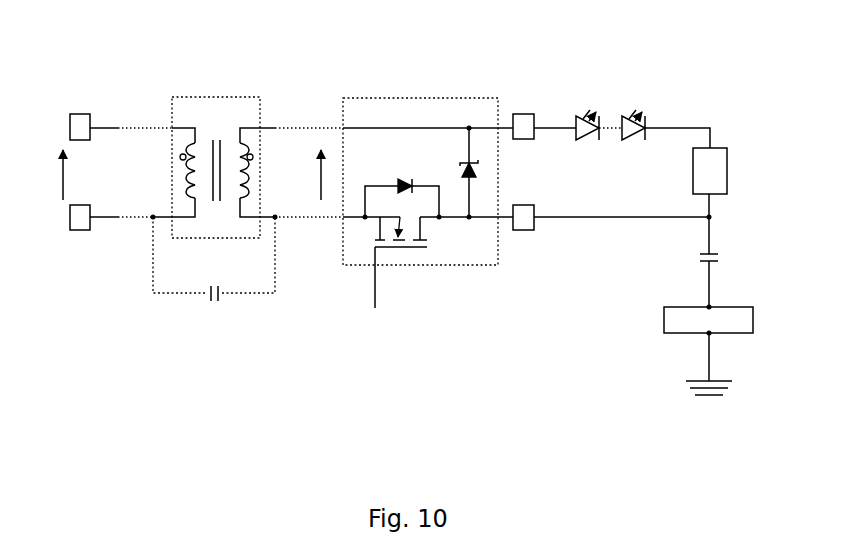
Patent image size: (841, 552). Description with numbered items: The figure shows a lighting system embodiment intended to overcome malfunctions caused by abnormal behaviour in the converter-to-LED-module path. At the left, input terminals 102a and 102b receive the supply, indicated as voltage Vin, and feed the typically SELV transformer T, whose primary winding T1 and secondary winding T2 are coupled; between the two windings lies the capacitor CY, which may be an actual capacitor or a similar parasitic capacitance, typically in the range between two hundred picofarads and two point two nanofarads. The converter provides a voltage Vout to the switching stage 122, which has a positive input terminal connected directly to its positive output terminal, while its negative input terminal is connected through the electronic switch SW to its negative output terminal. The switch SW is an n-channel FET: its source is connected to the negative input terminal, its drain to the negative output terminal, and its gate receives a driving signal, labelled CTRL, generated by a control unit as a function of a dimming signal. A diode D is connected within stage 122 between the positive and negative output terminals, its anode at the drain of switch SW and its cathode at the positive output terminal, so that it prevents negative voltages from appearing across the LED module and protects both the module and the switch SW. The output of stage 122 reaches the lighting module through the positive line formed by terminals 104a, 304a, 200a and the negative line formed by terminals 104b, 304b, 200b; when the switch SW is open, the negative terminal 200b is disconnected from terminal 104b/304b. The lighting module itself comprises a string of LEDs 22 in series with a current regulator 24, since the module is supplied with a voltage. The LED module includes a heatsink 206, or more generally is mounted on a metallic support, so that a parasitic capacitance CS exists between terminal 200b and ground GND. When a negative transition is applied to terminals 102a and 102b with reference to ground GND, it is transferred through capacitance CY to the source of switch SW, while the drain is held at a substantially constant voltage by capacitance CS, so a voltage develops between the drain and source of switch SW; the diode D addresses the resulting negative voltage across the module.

The input terminal 102a is at (75, 112).
The input terminal 102b is at (75, 233).
The transformer T is at (217, 162).
The primary winding T1 is at (200, 207).
The secondary winding T2 is at (232, 207).
The capacitor CY is at (220, 306).
The switching stage 122 is at (396, 96).
The diode D is at (461, 170).
The electronic switch SW is at (425, 259).
The control signal CTRL is at (347, 281).
The input voltage Vin is at (46, 175).
The voltage Vout is at (305, 175).
The terminal 104a is at (553, 84).
The terminal 304a is at (553, 84).
The terminal 200a is at (530, 112).
The terminal 104b is at (556, 269).
The terminal 304b is at (556, 269).
The terminal 200b is at (528, 233).
The string of LEDs 22 is at (628, 90).
The current regulator 24 is at (719, 147).
The parasitic capacitance CS is at (697, 258).
The heatsink 206 is at (676, 338).
The ground GND is at (710, 402).